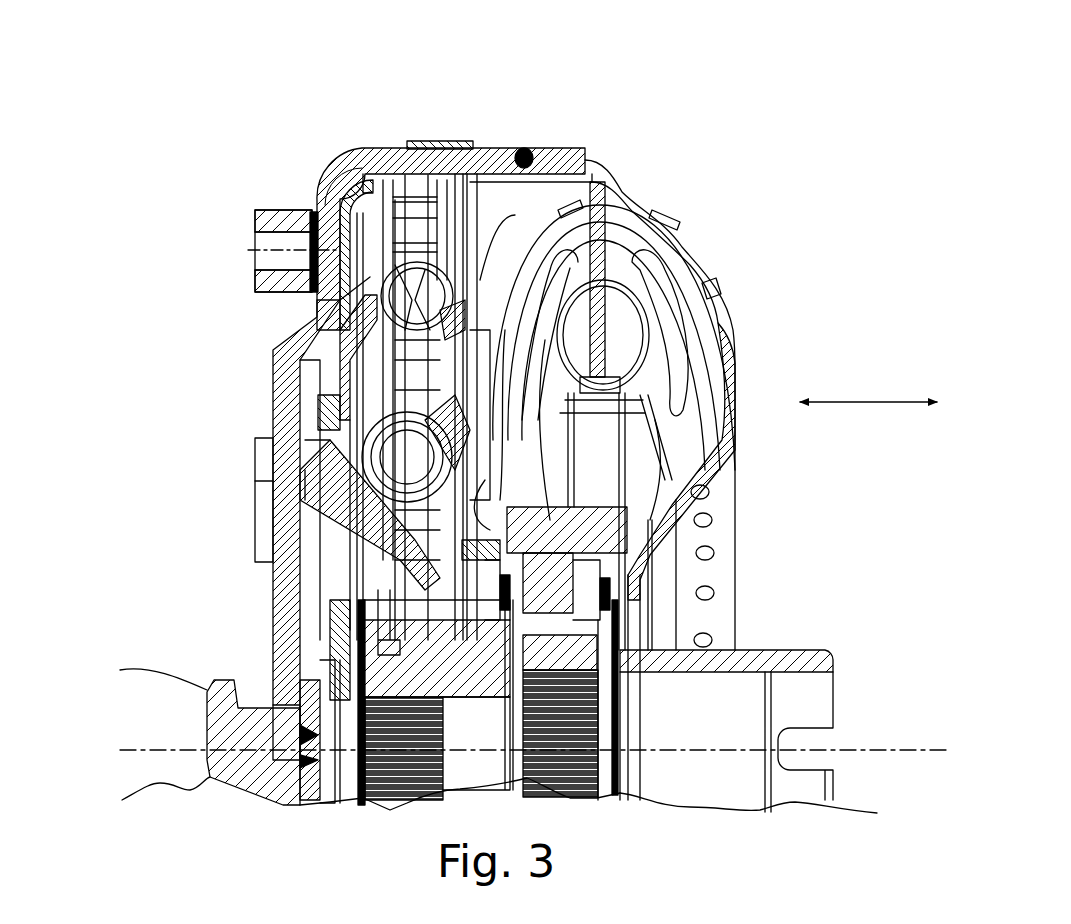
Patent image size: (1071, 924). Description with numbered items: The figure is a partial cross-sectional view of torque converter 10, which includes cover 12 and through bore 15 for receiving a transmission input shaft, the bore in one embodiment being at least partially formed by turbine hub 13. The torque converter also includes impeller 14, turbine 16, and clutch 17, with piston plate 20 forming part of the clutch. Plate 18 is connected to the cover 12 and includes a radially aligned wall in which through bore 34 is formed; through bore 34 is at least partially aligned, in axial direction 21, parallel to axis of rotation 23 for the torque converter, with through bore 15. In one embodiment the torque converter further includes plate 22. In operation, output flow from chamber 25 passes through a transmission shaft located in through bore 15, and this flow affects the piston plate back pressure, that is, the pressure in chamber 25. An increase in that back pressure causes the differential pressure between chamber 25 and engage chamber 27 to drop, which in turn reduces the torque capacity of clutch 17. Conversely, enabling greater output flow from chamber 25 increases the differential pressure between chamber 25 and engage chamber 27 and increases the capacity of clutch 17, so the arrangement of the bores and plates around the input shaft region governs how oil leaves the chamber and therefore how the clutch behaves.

The torque converter 10 is at (815, 105).
The cover 12 is at (313, 188).
The turbine hub 13 is at (330, 640).
The impeller 14 is at (688, 248).
The through bore 15 is at (300, 743).
The turbine 16 is at (558, 192).
The clutch 17 is at (320, 173).
The plate 18 is at (280, 517).
The piston plate 20 is at (300, 440).
The axial direction 21 is at (857, 402).
The plate 22 is at (334, 163).
The axis of rotation 23 is at (890, 752).
The chamber 25 is at (280, 393).
The engage chamber 27 is at (287, 337).
The through bore 34 is at (300, 730).